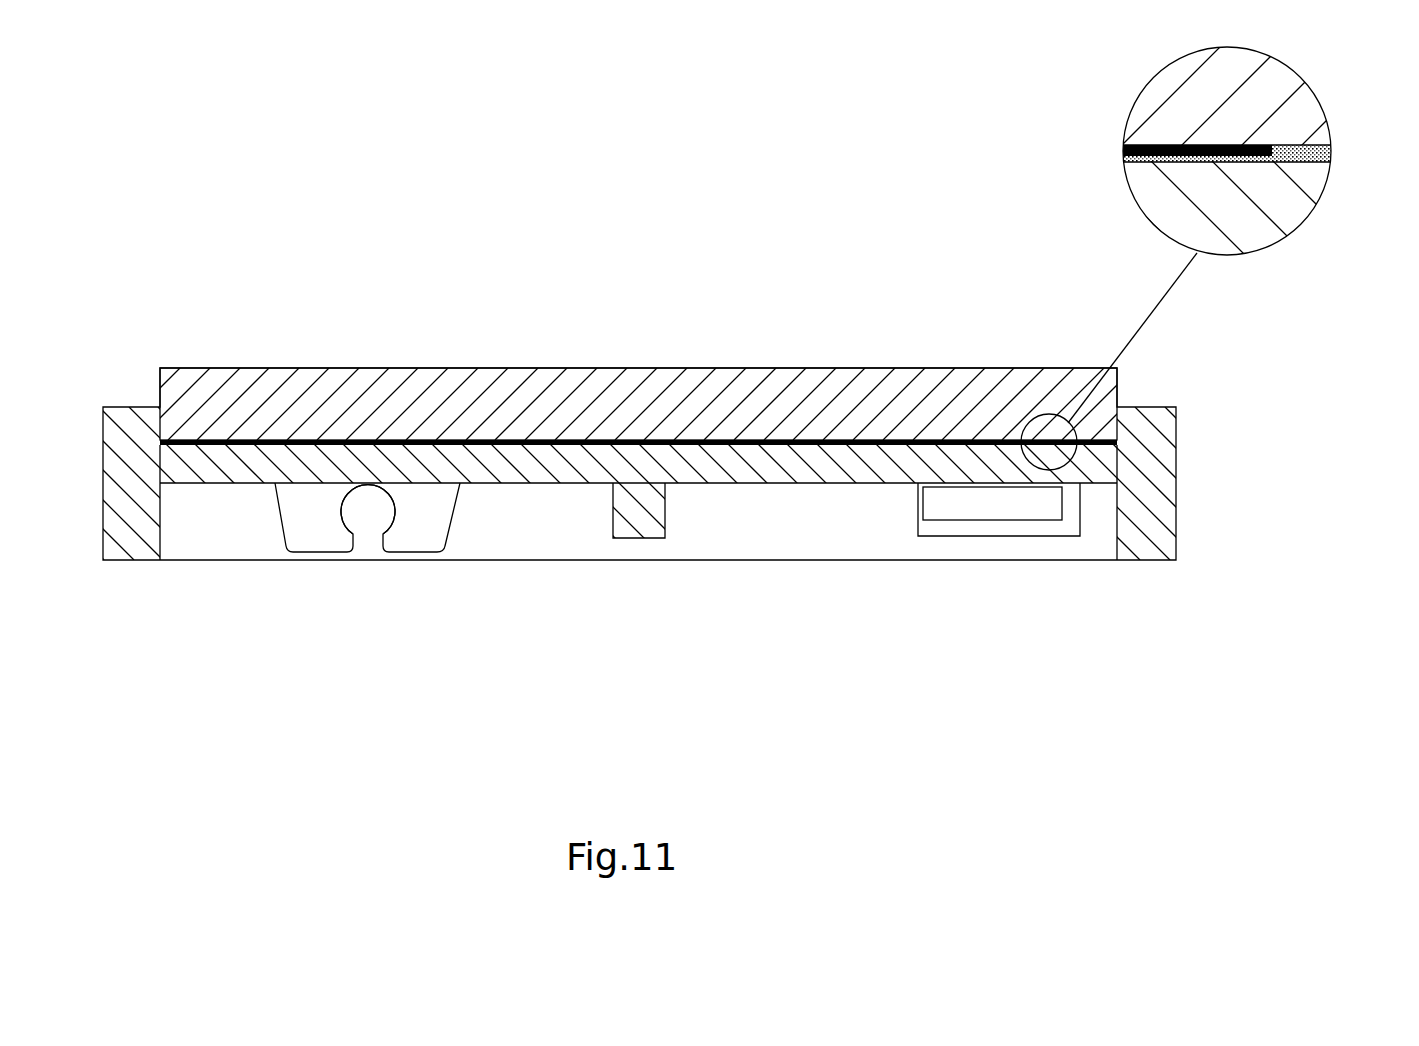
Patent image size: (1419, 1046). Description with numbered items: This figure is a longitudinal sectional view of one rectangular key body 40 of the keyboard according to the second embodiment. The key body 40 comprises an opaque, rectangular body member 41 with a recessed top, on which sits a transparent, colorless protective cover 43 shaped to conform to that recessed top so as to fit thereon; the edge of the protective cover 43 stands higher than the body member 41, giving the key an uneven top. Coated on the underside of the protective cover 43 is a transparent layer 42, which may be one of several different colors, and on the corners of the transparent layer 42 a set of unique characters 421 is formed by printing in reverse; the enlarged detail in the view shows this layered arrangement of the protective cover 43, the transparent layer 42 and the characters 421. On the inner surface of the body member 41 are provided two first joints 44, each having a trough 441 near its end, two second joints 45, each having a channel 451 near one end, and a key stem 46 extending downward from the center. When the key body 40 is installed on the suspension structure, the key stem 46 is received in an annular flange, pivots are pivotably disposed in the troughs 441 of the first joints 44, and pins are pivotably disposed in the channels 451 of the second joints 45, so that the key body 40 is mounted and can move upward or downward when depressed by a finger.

The key body 40 is at (493, 290).
The body member 41 is at (535, 465).
The transparent layer 42 is at (745, 438).
The characters 421 is at (1124, 145).
The protective cover 43 is at (637, 407).
The first joint 44 is at (432, 517).
The trough 441 is at (367, 513).
The second joint 45 is at (1055, 527).
The channel 451 is at (976, 507).
The key stem 46 is at (637, 518).